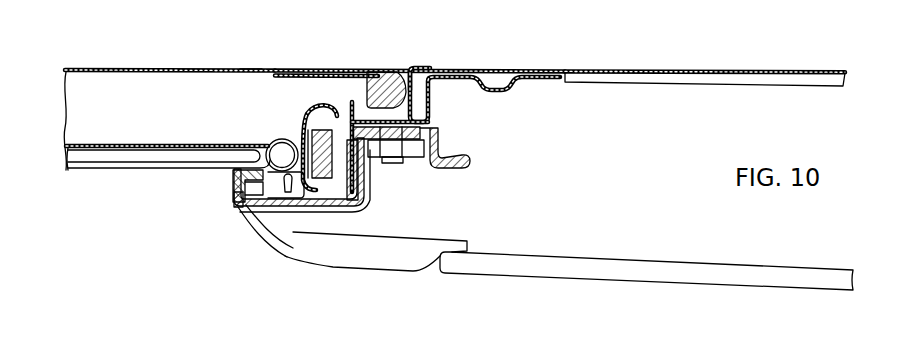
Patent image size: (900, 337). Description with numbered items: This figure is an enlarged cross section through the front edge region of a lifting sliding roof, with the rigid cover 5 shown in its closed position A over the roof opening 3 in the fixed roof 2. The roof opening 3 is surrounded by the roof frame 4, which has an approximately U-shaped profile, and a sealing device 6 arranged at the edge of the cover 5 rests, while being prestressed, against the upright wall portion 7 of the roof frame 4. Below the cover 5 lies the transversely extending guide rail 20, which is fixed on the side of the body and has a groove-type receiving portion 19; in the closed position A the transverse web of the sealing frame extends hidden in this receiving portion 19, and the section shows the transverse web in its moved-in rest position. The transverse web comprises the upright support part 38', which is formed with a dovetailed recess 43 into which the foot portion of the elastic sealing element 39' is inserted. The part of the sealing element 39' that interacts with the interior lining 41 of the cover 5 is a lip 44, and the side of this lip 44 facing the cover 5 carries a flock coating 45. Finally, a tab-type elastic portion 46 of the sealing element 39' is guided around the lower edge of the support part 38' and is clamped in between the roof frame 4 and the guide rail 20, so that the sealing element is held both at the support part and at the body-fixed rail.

The roof 2 is at (612, 68).
The roof opening 3 is at (328, 82).
The roof frame 4 is at (433, 103).
The cover 5 is at (168, 69).
The sealing device 6 is at (396, 70).
The upright wall portion 7 is at (413, 68).
The closed position A is at (246, 69).
The receiving portion 19 is at (341, 179).
The transversely extending guide rail 20 is at (353, 148).
The support part 38' is at (289, 179).
The sealing element 39' is at (281, 142).
The interior lining 41 is at (133, 153).
The dovetailed recess 43 is at (367, 153).
The lip 44 is at (312, 121).
The flock coating 45 is at (312, 118).
The tab-type elastic portion 46 is at (360, 191).